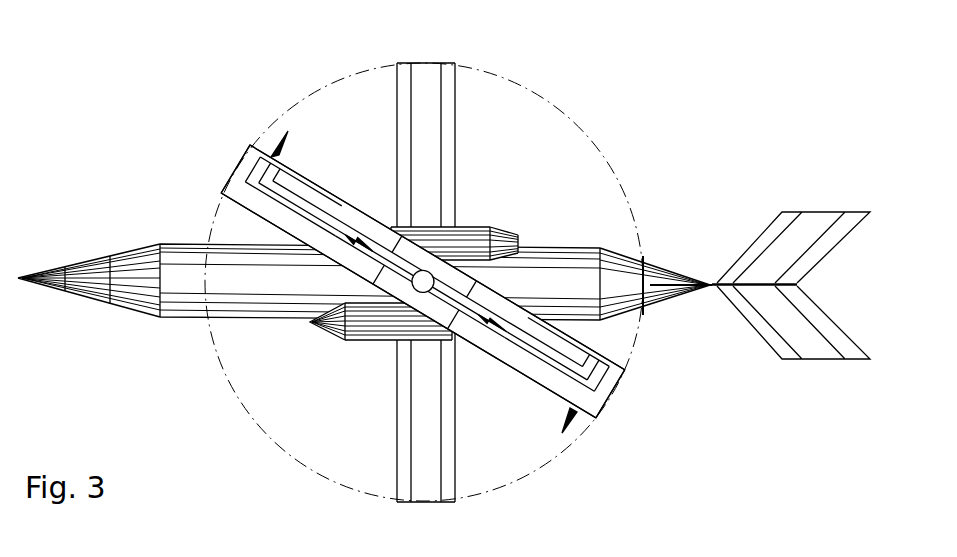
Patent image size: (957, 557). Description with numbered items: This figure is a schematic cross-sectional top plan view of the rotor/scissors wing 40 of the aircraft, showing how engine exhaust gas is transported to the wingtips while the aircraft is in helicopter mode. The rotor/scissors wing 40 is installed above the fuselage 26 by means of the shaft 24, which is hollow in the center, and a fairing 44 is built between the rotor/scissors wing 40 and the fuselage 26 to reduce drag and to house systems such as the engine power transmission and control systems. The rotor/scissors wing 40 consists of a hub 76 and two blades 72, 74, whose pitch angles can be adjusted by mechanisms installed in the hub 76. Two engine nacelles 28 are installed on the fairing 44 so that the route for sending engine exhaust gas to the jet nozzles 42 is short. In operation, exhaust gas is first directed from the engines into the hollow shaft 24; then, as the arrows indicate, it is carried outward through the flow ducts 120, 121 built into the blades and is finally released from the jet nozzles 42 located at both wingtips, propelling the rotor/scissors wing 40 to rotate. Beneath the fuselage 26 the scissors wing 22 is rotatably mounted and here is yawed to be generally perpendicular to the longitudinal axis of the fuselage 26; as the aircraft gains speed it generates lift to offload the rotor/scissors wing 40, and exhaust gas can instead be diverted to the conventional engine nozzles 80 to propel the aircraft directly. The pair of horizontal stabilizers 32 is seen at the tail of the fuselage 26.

The scissors wing 22 is at (426, 272).
The shaft 24 is at (430, 158).
The fuselage 26 is at (365, 297).
The engine nacelle 28 is at (486, 197).
The horizontal stabilizer 32 is at (782, 247).
The rotor/scissors wing 40 is at (417, 278).
The jet nozzle 42 is at (266, 152).
The fairing 44 is at (247, 287).
The blade 72 is at (242, 200).
The blade 74 is at (593, 358).
The hub 76 is at (387, 283).
The conventional engine nozzle 80 is at (508, 237).
The flow duct 120 is at (335, 220).
The flow duct 121 is at (521, 343).